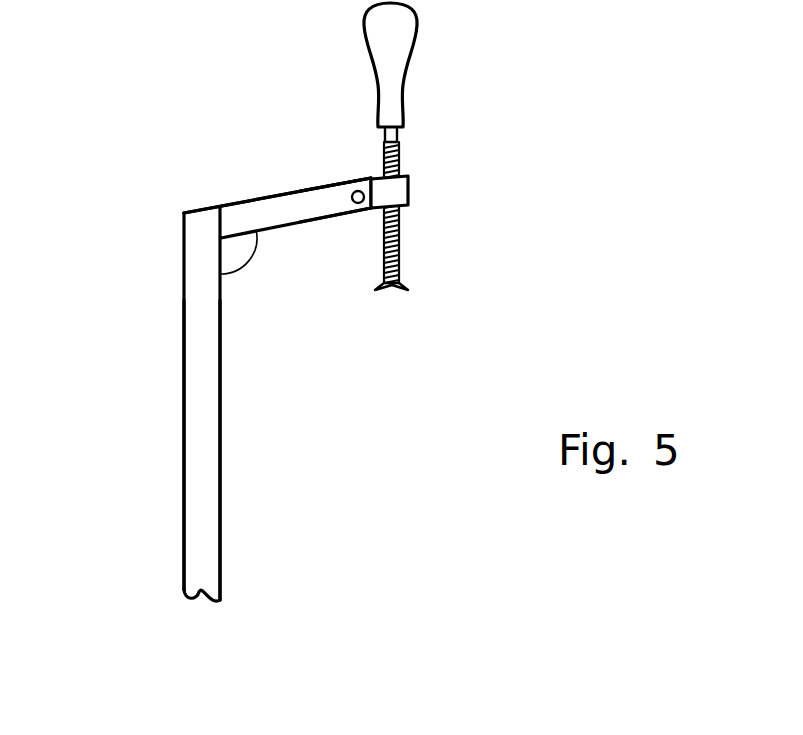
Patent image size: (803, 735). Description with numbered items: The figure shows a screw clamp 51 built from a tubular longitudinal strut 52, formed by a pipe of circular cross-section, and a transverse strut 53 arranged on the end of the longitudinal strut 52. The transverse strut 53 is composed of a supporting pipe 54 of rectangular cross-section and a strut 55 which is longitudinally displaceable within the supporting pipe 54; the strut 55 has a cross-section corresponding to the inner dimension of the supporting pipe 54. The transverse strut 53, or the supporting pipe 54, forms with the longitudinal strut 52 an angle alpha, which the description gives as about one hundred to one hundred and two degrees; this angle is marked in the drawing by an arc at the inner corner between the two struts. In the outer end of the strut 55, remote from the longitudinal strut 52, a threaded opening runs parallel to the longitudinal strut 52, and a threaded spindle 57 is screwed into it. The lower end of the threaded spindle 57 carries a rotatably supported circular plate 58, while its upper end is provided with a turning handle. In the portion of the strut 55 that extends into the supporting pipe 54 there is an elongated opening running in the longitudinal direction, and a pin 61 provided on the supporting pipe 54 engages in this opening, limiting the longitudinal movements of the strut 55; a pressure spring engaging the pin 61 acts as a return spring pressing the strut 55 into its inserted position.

The screw clamp 51 is at (150, 340).
The longitudinal strut 52 is at (199, 443).
The transverse strut 53 is at (265, 183).
The supporting pipe 54 is at (305, 205).
The strut 55 is at (397, 190).
The threaded spindle 57 is at (400, 255).
The circular plate 58 is at (393, 290).
The pin 61 is at (355, 205).
The angle alpha is at (238, 253).